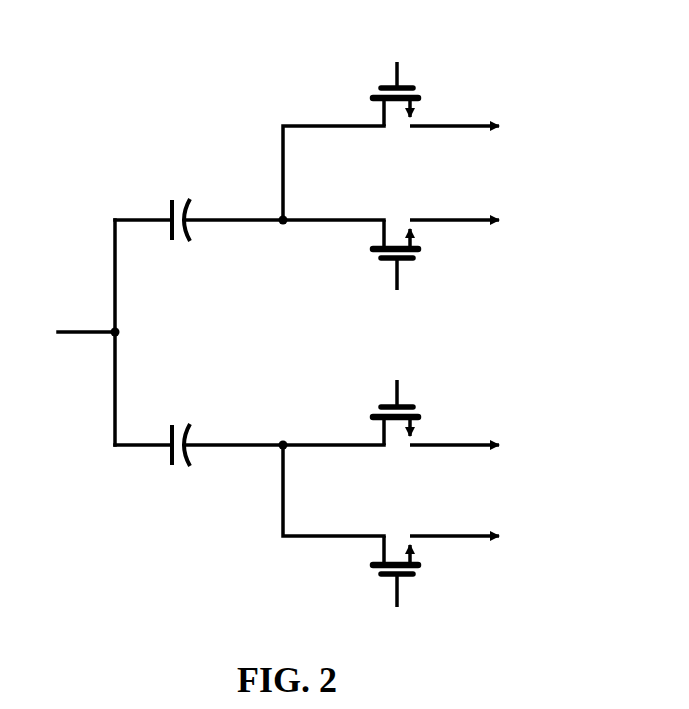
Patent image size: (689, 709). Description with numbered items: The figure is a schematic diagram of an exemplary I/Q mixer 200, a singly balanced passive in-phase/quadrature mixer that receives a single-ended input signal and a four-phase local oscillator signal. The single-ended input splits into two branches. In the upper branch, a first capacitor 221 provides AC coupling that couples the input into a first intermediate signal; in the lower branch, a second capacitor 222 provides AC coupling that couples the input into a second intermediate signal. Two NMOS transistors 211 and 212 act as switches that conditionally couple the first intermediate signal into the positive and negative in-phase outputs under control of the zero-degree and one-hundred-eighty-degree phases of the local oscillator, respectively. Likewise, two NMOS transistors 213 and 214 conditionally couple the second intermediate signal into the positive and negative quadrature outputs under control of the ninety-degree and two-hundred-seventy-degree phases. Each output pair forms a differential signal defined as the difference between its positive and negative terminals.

The I/Q mixer 200 is at (206, 617).
The NMOS transistor 211 is at (419, 98).
The NMOS transistor 212 is at (419, 249).
The NMOS transistor 213 is at (419, 417).
The NMOS transistor 214 is at (419, 565).
The first capacitor 221 is at (195, 206).
The second capacitor 222 is at (195, 459).